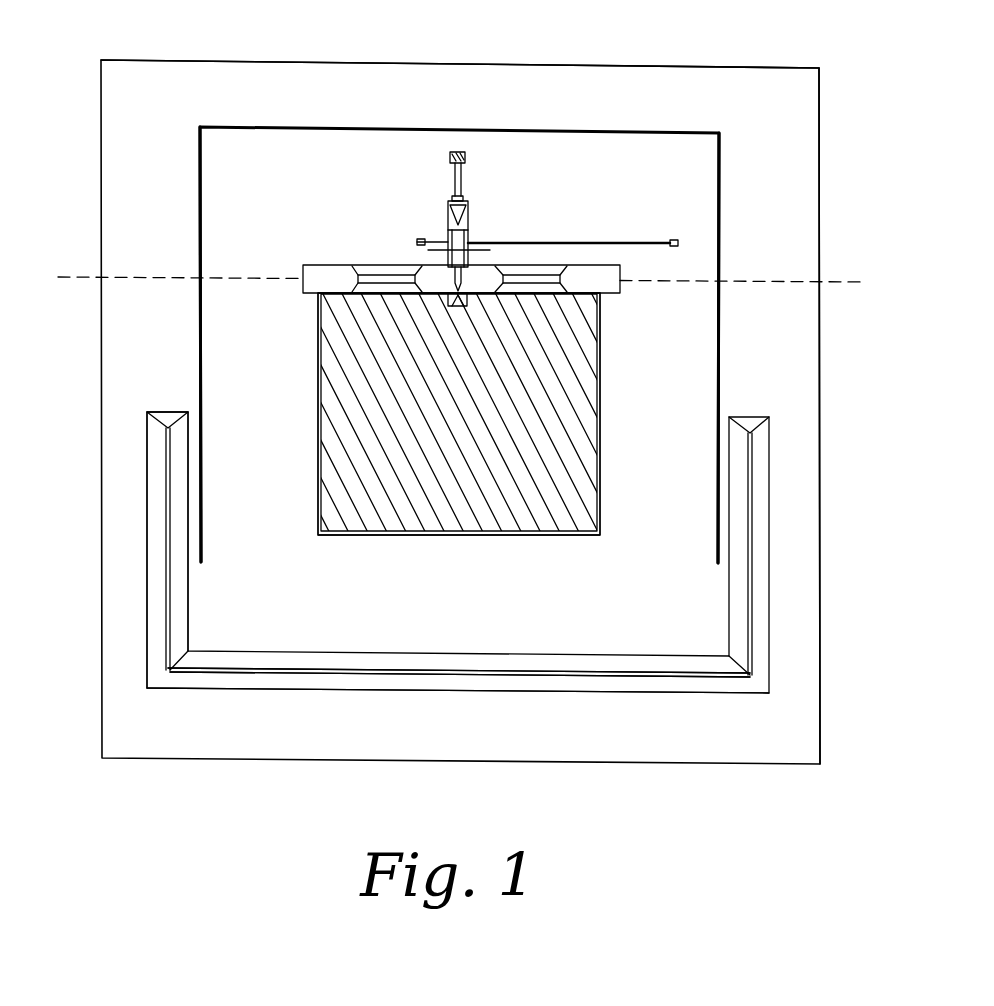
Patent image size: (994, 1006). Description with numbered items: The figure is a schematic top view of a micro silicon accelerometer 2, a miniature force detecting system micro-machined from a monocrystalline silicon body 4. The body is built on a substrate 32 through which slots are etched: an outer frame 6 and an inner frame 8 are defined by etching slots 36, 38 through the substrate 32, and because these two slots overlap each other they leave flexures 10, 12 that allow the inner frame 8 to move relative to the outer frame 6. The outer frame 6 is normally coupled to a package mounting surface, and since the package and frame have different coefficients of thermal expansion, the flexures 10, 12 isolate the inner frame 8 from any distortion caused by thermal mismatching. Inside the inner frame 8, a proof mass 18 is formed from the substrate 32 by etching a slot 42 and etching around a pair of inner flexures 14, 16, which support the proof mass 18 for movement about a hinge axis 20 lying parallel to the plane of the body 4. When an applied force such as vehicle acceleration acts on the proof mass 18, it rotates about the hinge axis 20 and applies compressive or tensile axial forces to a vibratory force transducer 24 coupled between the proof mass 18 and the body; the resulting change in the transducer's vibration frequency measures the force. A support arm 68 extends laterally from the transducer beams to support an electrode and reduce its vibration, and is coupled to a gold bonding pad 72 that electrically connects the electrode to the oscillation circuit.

The accelerometer 2 is at (838, 86).
The monocrystalline silicon body 4 is at (675, 85).
The outer frame 6 is at (800, 373).
The inner frame 8 is at (215, 345).
The flexure 10 is at (195, 480).
The flexure 12 is at (722, 525).
The inner flexure 14 is at (372, 266).
The inner flexure 16 is at (533, 270).
The proof mass 18 is at (312, 452).
The hinge axis 20 is at (73, 277).
The vibratory force transducer 24 is at (433, 218).
The substrate 32 is at (823, 655).
The slot 36 is at (200, 186).
The slot 38 is at (232, 672).
The slot 42 is at (600, 441).
The support arm 68 is at (613, 243).
The bonding pad 72 is at (676, 240).